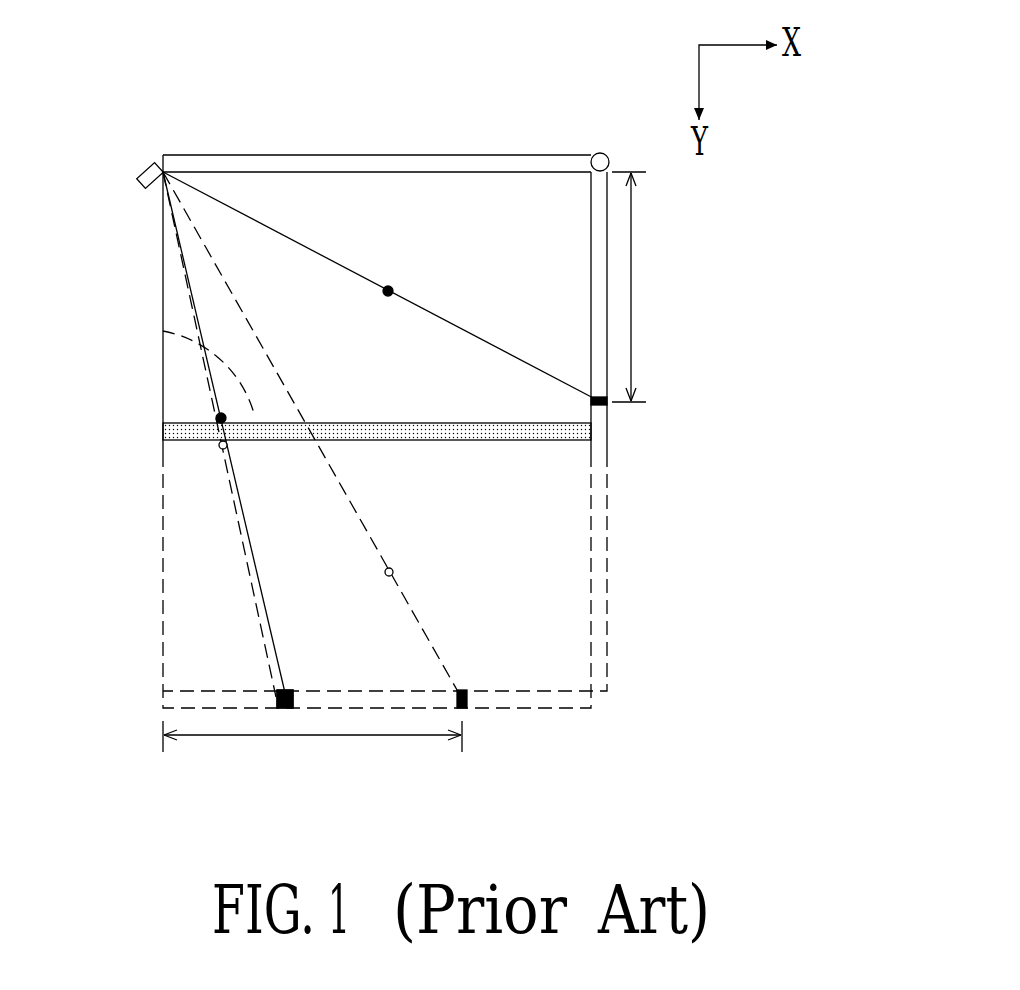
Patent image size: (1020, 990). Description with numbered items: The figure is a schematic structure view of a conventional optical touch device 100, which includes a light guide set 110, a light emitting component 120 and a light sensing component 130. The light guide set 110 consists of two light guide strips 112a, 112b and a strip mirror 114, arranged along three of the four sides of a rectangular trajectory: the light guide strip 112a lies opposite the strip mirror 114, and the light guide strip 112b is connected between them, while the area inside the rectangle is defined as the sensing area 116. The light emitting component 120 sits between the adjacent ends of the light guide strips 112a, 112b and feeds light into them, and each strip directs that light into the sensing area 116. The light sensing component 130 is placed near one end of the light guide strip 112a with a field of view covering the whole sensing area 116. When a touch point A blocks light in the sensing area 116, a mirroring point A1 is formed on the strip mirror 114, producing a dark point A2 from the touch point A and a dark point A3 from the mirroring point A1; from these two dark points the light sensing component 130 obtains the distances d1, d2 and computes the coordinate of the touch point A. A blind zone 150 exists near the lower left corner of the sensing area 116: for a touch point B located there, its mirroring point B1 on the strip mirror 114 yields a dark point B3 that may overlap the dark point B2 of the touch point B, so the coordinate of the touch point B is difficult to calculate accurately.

The optical touch device 100 is at (752, 753).
The light guide set 110 is at (385, 239).
The light guide strip 112a is at (328, 163).
The light guide strip 112b is at (597, 226).
The strip mirror 114 is at (462, 434).
The sensing area 116 is at (238, 200).
The light emitting component 120 is at (603, 153).
The light sensing component 130 is at (150, 166).
The blind zone 150 is at (187, 405).
The touch point A is at (393, 289).
The mirroring point A1 is at (391, 566).
The dark point A2 is at (607, 404).
The dark point A3 is at (467, 700).
The touch point B is at (227, 417).
The mirroring point B1 is at (219, 448).
The dark point B2 is at (293, 702).
The dark point B3 is at (278, 706).
The distance d1 is at (633, 282).
The distance d2 is at (310, 739).